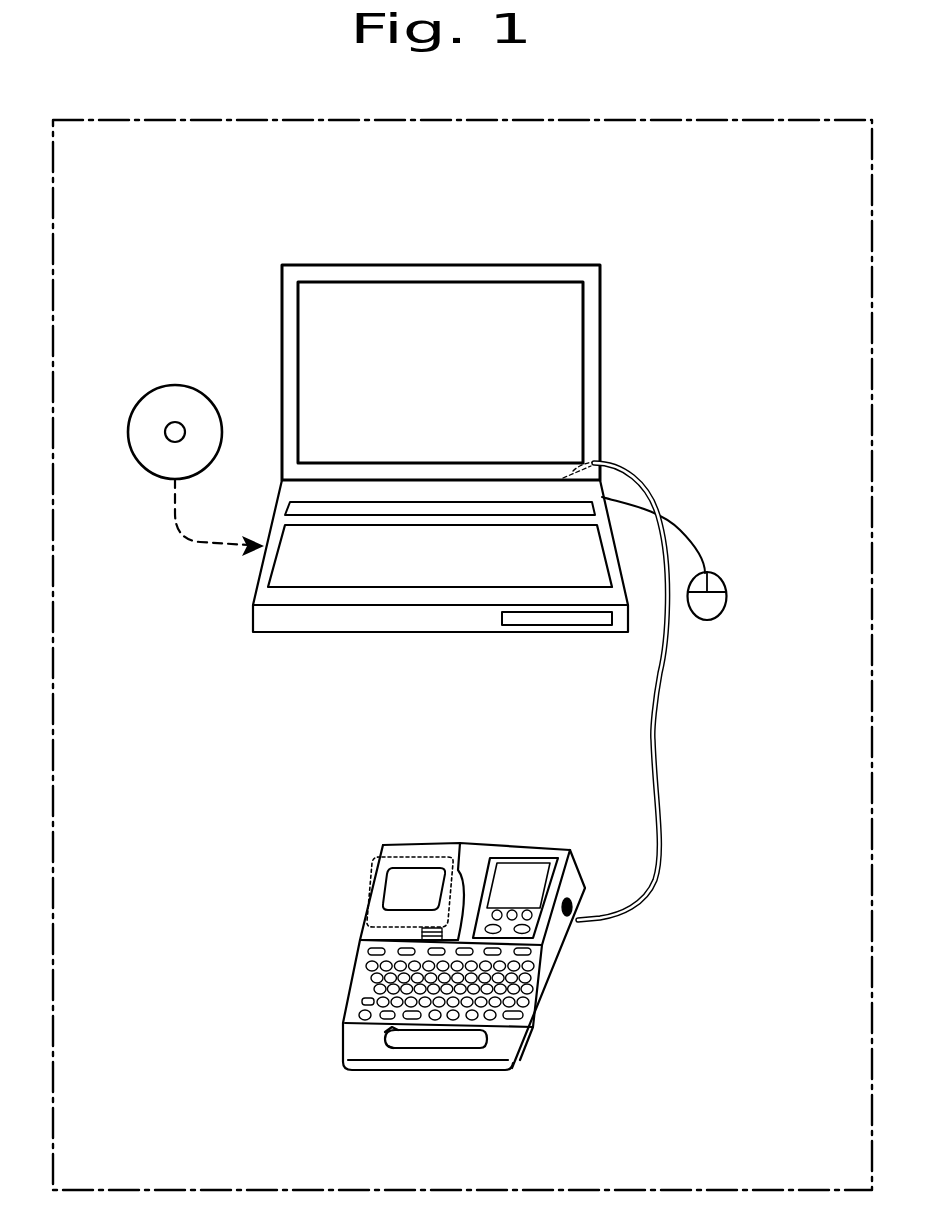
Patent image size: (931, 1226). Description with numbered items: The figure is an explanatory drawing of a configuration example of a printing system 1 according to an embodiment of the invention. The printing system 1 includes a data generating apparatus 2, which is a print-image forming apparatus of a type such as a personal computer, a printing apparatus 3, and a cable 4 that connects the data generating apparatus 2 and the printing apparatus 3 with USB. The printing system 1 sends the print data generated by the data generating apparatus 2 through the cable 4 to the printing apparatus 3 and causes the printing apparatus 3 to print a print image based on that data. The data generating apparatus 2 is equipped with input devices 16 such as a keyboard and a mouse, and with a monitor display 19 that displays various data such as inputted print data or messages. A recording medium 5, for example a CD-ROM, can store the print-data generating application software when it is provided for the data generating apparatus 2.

The printing system 1 is at (604, 119).
The data generating apparatus 2 is at (490, 500).
The printing apparatus 3 is at (586, 985).
The cable 4 is at (660, 705).
The recording medium 5 is at (175, 386).
The input devices 16 is at (700, 603).
The monitor display 19 is at (562, 418).